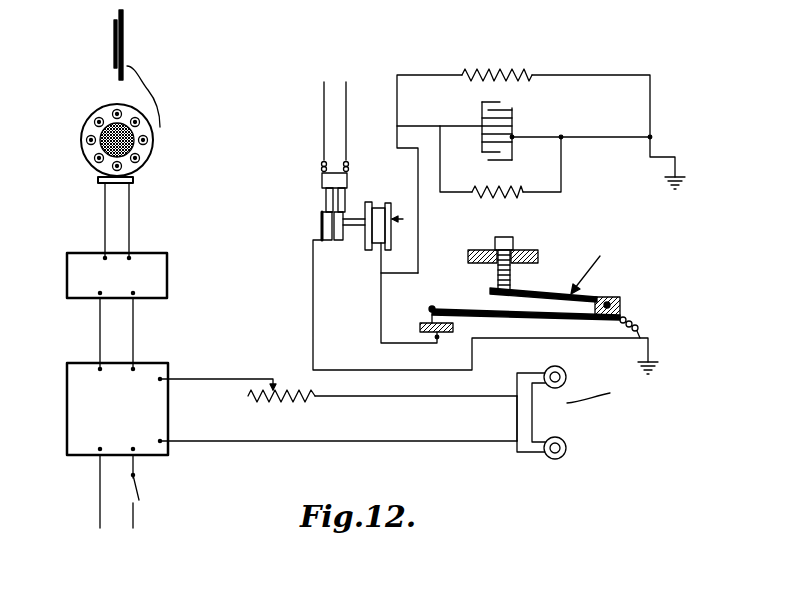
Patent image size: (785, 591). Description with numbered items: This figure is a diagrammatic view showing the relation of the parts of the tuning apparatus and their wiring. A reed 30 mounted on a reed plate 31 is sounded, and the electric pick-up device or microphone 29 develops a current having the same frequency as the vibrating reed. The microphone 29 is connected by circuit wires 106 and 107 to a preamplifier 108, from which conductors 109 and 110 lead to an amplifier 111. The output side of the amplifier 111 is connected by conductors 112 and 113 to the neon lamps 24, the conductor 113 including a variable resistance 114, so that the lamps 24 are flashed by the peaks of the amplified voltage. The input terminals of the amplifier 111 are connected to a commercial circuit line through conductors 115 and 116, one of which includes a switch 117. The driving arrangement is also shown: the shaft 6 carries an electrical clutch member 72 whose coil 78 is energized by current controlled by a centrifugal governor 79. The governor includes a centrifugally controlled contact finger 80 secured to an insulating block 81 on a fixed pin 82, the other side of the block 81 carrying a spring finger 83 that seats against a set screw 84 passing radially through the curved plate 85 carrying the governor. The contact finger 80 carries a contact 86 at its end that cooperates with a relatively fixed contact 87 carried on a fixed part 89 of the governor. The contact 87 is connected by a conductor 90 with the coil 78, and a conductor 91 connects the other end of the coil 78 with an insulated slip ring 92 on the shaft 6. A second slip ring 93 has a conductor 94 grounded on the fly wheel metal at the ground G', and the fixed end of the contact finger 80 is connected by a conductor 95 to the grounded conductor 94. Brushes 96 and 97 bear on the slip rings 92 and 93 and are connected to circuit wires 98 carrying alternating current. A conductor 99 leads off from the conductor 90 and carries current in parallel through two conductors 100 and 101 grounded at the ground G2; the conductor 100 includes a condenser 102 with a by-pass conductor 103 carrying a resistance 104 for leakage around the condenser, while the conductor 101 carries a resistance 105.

The reed 30 is at (113, 28).
The reed plate 31 is at (123, 26).
The electric pick-up device or microphone 29 is at (145, 153).
The circuit wire 106 is at (105, 216).
The circuit wire 107 is at (131, 213).
The preamplifier 108 is at (168, 268).
The conductor 109 is at (100, 335).
The conductor 110 is at (135, 330).
The amplifier 111 is at (117, 409).
The conductor 112 is at (226, 442).
The conductor 113 is at (357, 398).
The variable resistance 114 is at (285, 398).
The conductor 115 is at (98, 504).
The conductor 116 is at (135, 520).
The switch 117 is at (136, 480).
The circuit wires 98 is at (323, 116).
The brush 97 is at (326, 196).
The brush 96 is at (343, 196).
The shaft 6 is at (320, 223).
The insulated slip ring 92 is at (340, 241).
The second slip ring 93 is at (328, 241).
The conductor 91 is at (367, 201).
The coil 78 is at (389, 202).
The electrical clutch member 72 is at (405, 227).
The conductor 99 is at (419, 231).
The conductor 94 is at (314, 311).
The conductor 90 is at (382, 318).
The curved plate 85 is at (529, 252).
The set screw 84 is at (498, 280).
The spring finger 83 is at (545, 289).
The centrifugal governor 79 is at (591, 263).
The block 81 is at (621, 306).
The fixed pin 82 is at (609, 302).
The contact finger 80 is at (509, 318).
The conductor 95 is at (641, 336).
The ground G' is at (663, 352).
The contact 86 is at (434, 307).
The relatively fixed contact 87 is at (445, 320).
The fixed part 89 is at (440, 341).
The resistance 105 is at (510, 72).
The conductor 101 is at (583, 75).
The condenser 102 is at (508, 103).
The conductor 100 is at (557, 136).
The by-pass conductor 103 is at (561, 172).
The resistance 104 is at (518, 196).
The ground G2 is at (676, 175).
The lamps 24 is at (567, 376).